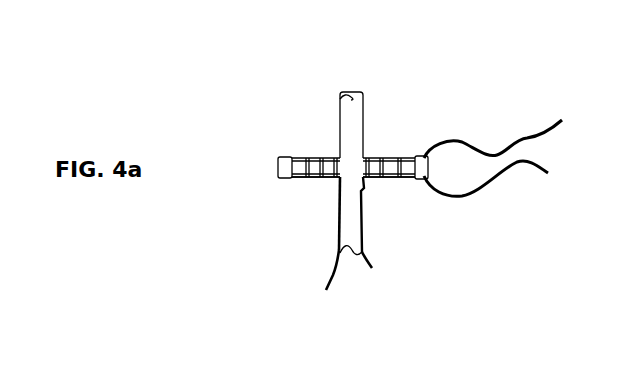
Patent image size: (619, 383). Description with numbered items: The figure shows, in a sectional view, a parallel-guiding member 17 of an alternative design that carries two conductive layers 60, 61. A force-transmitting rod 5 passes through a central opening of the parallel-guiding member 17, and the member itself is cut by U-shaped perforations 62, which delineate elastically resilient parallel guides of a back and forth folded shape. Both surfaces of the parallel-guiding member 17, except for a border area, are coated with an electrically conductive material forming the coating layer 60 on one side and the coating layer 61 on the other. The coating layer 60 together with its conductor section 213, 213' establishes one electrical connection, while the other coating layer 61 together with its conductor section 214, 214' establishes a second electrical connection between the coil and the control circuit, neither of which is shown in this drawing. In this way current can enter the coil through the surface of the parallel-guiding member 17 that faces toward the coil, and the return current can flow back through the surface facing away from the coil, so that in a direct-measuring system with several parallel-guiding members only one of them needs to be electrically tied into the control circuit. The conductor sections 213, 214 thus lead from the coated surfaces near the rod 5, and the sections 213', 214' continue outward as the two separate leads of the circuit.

The parallel-guiding member 17 is at (262, 111).
The conductive layer 60 is at (313, 155).
The conductive layer 61 is at (386, 183).
The U-shaped perforations 62 is at (313, 177).
The force-transmitting rod 5 is at (348, 133).
The conductor section 213 is at (314, 303).
The conductor section 214 is at (377, 301).
The conductor section 213' is at (493, 117).
The conductor section 214' is at (504, 193).